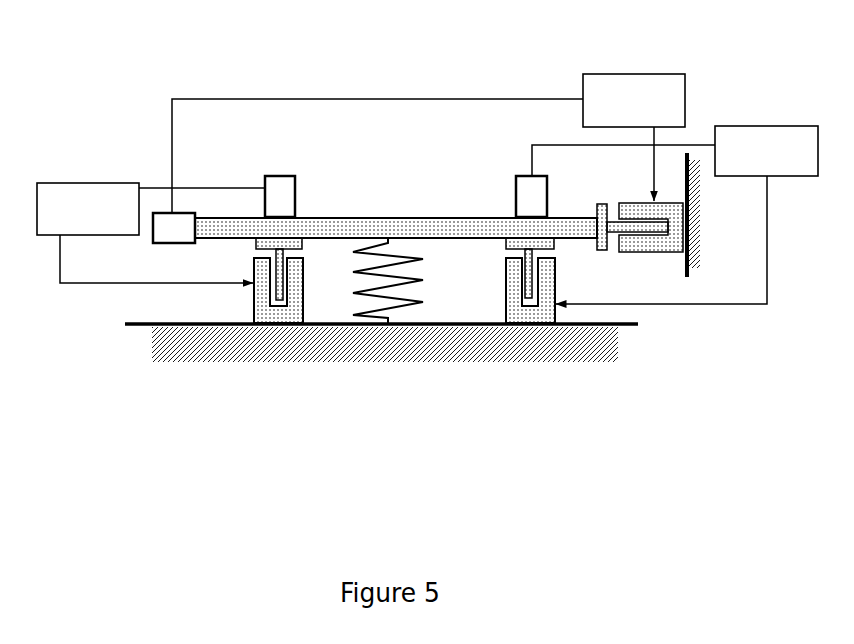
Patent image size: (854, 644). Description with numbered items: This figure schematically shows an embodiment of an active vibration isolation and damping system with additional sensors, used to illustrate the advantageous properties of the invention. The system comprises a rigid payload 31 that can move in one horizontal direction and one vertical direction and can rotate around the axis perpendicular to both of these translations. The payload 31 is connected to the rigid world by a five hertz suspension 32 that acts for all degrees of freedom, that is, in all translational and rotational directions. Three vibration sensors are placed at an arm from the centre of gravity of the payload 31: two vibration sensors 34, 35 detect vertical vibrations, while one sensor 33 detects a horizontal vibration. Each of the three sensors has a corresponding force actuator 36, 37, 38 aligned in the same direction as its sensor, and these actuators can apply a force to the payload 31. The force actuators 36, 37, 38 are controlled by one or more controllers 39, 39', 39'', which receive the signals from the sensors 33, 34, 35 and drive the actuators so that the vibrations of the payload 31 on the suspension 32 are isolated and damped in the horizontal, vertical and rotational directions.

The rigid payload 31 is at (395, 216).
The suspension 32 is at (356, 295).
The vibration sensor 33 is at (174, 211).
The vibration sensor 34 is at (285, 173).
The vibration sensor 35 is at (527, 175).
The force actuator 36 is at (646, 237).
The force actuator 37 is at (272, 310).
The force actuator 38 is at (523, 310).
The controller 39 is at (138, 207).
The controller 39' is at (428, 118).
The controller 39'' is at (681, 187).